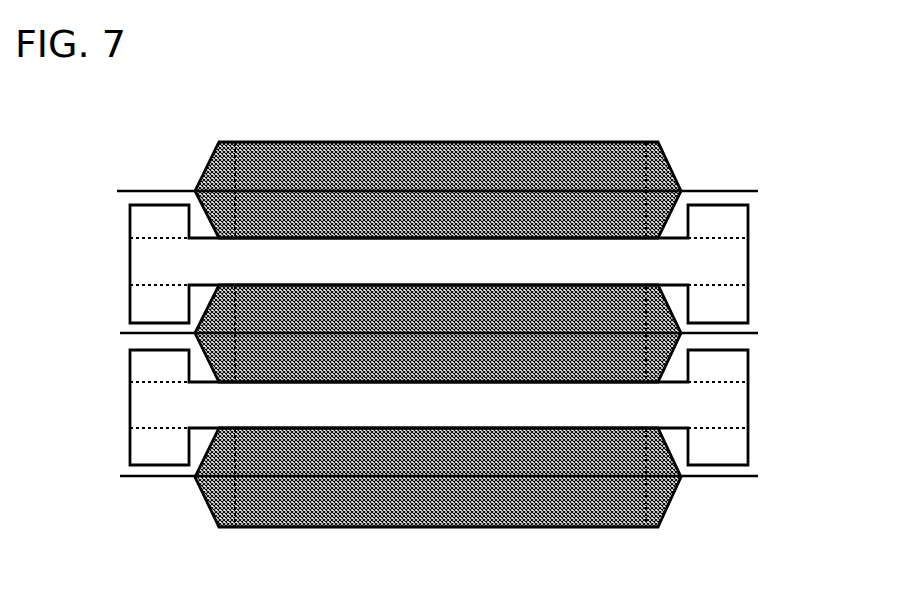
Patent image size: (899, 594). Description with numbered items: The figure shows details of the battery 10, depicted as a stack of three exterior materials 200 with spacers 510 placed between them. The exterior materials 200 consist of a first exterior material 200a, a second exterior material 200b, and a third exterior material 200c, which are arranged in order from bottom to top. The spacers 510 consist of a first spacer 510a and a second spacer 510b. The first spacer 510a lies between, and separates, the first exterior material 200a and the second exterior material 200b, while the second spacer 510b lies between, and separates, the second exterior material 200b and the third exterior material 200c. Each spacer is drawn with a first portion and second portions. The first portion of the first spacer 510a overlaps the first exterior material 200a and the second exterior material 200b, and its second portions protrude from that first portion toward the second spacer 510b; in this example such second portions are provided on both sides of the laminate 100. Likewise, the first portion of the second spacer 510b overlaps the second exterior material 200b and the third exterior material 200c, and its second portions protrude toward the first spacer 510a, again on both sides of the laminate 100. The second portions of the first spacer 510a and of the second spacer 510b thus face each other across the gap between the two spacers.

The battery 10 is at (775, 106).
The laminate 100 is at (210, 515).
The exterior materials 200 is at (530, 346).
The first exterior material 200a is at (668, 501).
The second exterior material 200b is at (669, 313).
The third exterior material 200c is at (668, 163).
The spacers 510 is at (464, 335).
The first spacer 510a is at (768, 404).
The second spacer 510b is at (768, 231).